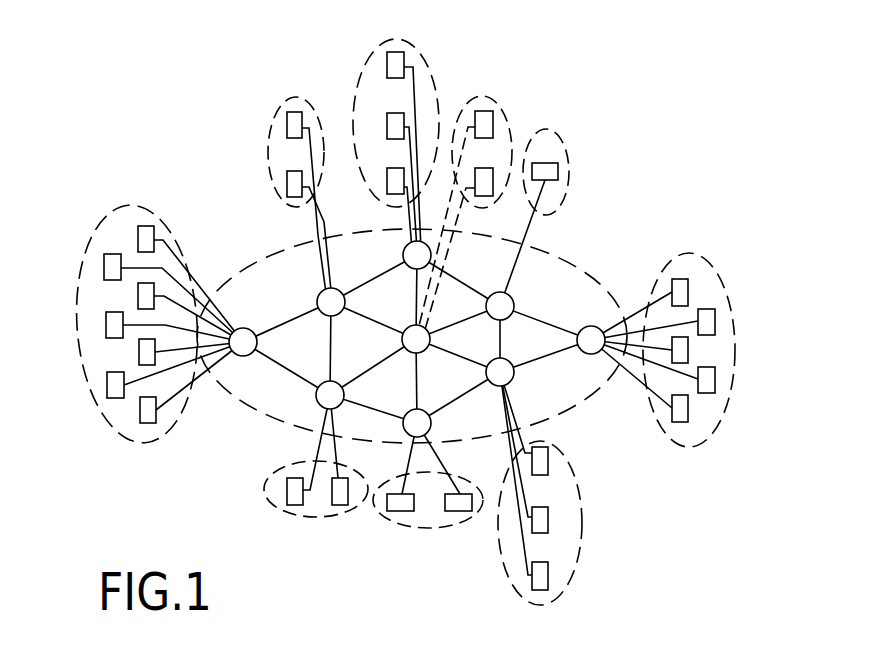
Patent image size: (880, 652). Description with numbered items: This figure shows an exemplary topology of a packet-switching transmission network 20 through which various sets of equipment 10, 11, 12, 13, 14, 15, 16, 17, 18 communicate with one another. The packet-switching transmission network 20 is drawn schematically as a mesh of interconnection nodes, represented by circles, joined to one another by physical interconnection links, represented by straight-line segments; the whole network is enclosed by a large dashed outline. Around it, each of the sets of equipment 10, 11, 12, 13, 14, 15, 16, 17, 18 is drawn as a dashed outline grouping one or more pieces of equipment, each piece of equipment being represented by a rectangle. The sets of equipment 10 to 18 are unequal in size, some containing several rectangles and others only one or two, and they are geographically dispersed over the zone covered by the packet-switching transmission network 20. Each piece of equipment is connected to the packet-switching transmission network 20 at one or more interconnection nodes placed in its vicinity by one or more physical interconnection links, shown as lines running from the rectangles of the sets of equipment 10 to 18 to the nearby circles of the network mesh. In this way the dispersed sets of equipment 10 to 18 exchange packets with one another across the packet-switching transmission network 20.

The set of equipment 10 is at (85, 270).
The set of equipment 11 is at (279, 112).
The set of equipment 12 is at (371, 61).
The set of equipment 13 is at (500, 108).
The set of equipment 14 is at (568, 166).
The set of equipment 15 is at (305, 517).
The set of equipment 16 is at (414, 528).
The set of equipment 17 is at (582, 510).
The set of equipment 18 is at (733, 370).
The packet-switching transmission network 20 is at (565, 256).